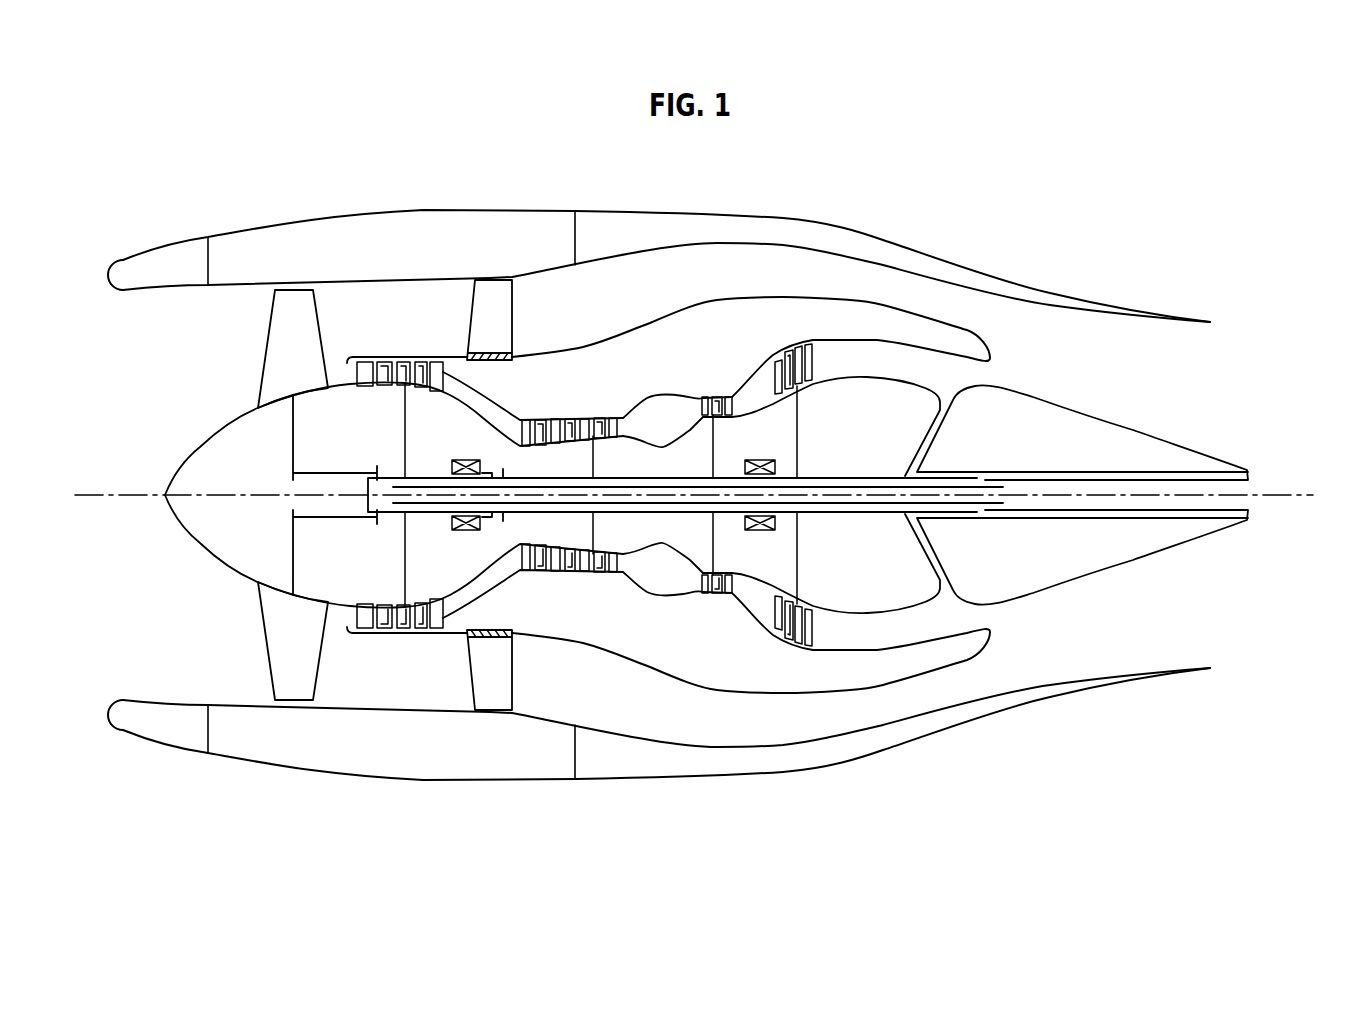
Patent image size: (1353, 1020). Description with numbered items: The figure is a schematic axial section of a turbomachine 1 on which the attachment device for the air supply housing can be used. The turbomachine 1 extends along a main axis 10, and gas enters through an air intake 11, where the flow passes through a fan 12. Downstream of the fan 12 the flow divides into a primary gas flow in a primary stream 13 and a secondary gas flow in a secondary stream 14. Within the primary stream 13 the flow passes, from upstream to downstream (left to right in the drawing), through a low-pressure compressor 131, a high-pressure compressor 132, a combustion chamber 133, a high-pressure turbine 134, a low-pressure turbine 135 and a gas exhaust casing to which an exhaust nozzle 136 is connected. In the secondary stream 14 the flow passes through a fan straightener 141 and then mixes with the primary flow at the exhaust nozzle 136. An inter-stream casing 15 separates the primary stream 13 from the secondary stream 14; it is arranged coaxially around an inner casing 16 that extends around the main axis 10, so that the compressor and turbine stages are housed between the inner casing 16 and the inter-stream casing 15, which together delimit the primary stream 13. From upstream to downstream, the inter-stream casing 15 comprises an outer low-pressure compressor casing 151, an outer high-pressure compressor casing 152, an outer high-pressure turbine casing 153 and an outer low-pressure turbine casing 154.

The turbomachine 1 is at (793, 182).
The main axis 10 is at (1295, 495).
The air intake 11 is at (158, 393).
The fan 12 is at (282, 363).
The primary stream 13 is at (483, 578).
The secondary stream 14 is at (379, 333).
The fan straightener 141 is at (474, 333).
The inter-stream casing 15 is at (657, 373).
The outer low-pressure compressor casing 151 is at (407, 357).
The outer high-pressure compressor casing 152 is at (567, 412).
The outer high-pressure turbine casing 153 is at (713, 396).
The outer low-pressure turbine casing 154 is at (795, 338).
The inner casing 16 is at (679, 465).
The low-pressure compressor 131 is at (402, 629).
The high-pressure compressor 132 is at (567, 573).
The combustion chamber 133 is at (644, 578).
The high-pressure turbine 134 is at (713, 597).
The low-pressure turbine 135 is at (790, 639).
The exhaust nozzle 136 is at (1022, 560).